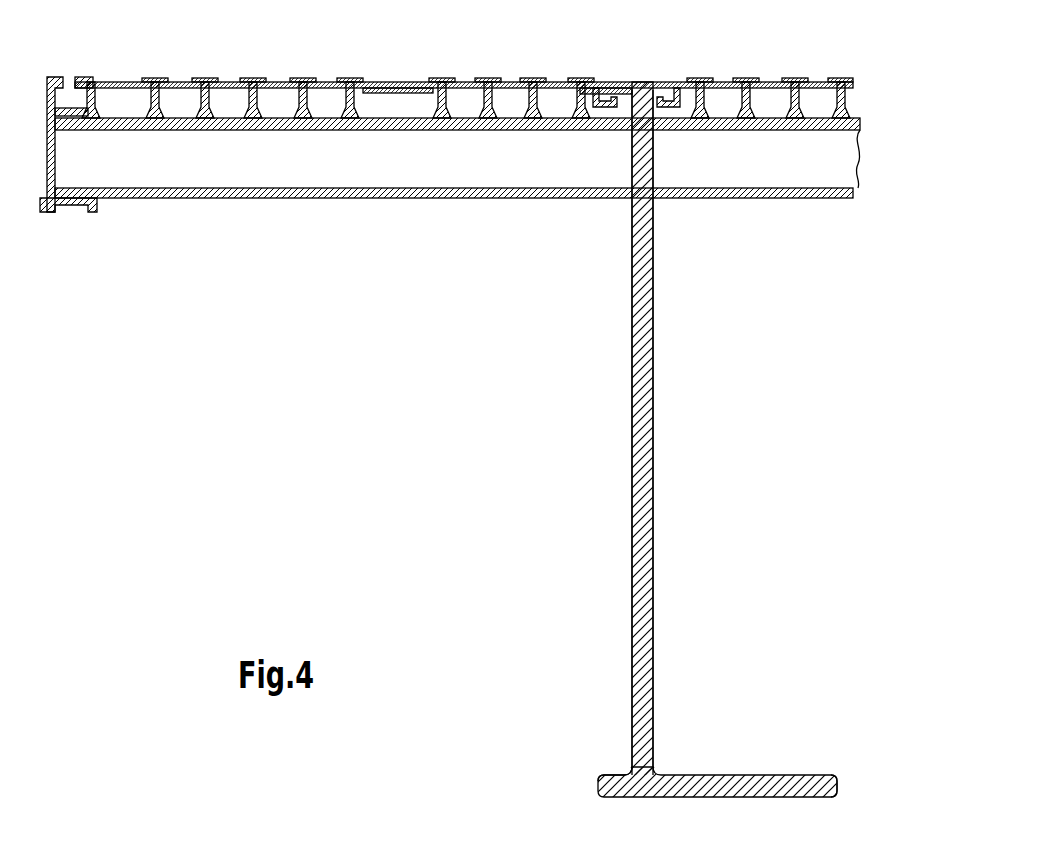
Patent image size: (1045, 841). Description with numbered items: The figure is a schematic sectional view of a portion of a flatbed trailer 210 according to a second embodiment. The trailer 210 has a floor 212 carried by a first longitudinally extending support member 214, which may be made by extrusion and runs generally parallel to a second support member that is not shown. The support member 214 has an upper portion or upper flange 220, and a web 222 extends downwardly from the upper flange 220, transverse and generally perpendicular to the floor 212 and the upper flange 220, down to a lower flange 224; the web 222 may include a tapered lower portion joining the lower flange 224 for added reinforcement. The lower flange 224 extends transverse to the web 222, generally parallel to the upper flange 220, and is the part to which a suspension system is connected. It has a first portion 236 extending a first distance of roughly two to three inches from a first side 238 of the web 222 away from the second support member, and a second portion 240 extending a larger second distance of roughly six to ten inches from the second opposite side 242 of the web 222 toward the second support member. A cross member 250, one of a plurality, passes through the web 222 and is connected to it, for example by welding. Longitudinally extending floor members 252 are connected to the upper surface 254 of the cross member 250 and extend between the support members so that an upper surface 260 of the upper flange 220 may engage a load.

The flatbed trailer 210 is at (844, 72).
The floor 212 is at (374, 80).
The first longitudinally extending support member 214 is at (629, 315).
The upper flange 220 is at (628, 80).
The web 222 is at (655, 432).
The lower flange 224 is at (719, 779).
The first portion of the lower flange 236 is at (611, 781).
The first side of the web 238 is at (630, 499).
The second portion of the lower flange 240 is at (800, 786).
The second opposite side of the web 242 is at (655, 625).
The cross member 250 is at (380, 200).
The floor member 252 is at (231, 80).
The upper surface of the cross member 254 is at (418, 82).
The upper surface of the upper flange 260 is at (656, 80).